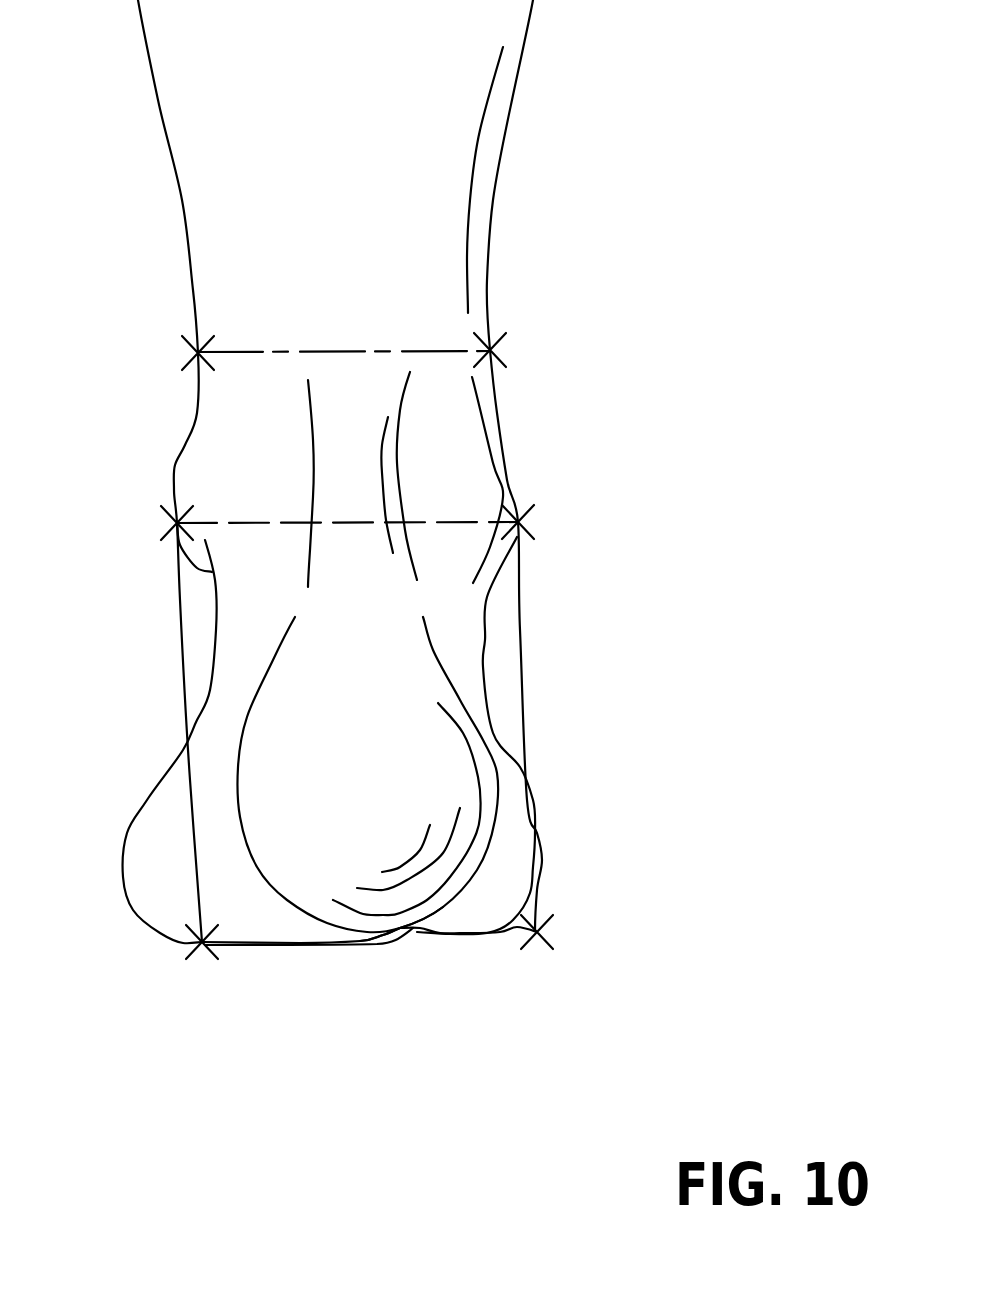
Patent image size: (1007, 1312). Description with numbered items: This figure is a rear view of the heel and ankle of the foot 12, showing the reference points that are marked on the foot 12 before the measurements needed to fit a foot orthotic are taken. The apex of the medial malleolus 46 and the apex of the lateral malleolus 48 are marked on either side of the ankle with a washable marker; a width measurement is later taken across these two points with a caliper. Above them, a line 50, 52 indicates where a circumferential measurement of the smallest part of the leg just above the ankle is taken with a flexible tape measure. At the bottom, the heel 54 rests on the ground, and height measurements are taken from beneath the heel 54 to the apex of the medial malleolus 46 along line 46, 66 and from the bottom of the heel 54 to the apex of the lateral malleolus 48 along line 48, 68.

The foot 12 is at (618, 738).
The medial malleolus apex 46 is at (177, 523).
The lateral malleolus apex 48 is at (518, 522).
The circumferential measurement line (medial point) 50 is at (198, 353).
The circumferential measurement line (lateral point) 52 is at (490, 350).
The heel 54 is at (387, 937).
The height measurement point beneath heel (medial) 66 is at (202, 942).
The height measurement point beneath heel (lateral) 68 is at (537, 932).